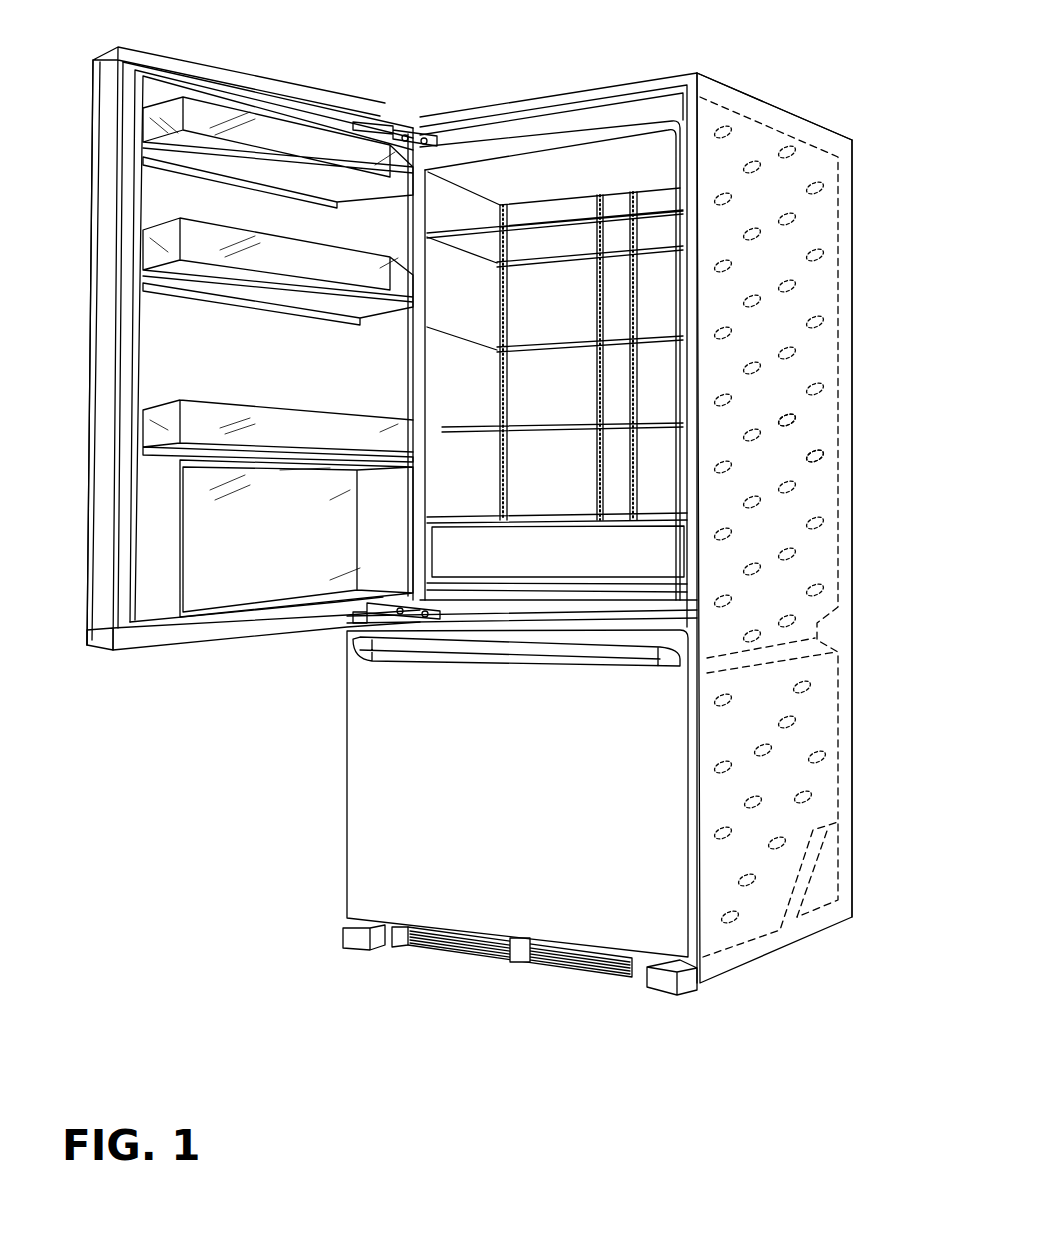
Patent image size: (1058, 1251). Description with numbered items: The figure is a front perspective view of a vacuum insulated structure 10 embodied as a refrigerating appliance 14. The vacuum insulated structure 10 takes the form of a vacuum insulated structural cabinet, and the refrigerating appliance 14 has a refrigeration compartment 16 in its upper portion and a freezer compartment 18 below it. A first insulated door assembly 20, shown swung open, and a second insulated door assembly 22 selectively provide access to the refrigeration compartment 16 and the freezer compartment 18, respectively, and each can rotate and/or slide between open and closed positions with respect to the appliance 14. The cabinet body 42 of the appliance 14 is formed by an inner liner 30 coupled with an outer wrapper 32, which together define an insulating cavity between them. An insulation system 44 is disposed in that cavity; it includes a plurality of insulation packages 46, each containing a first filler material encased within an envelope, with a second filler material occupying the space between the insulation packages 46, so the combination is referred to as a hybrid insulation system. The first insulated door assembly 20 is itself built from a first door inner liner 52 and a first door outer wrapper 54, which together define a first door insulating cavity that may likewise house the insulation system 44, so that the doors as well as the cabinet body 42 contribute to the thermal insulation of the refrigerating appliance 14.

The vacuum insulated structure 10 is at (850, 252).
The refrigerating appliance 14 is at (800, 88).
The refrigeration compartment 16 is at (661, 376).
The freezer compartment 18 is at (740, 893).
The first insulated door assembly 20 is at (86, 262).
The second insulated door assembly 22 is at (340, 762).
The inner liner 30 is at (574, 165).
The outer wrapper 32 is at (830, 133).
The cabinet body 42 is at (852, 560).
The insulation system 44 is at (812, 344).
The insulation packages 46 is at (802, 423).
The first door inner liner 52 is at (120, 612).
The first door outer wrapper 54 is at (88, 478).